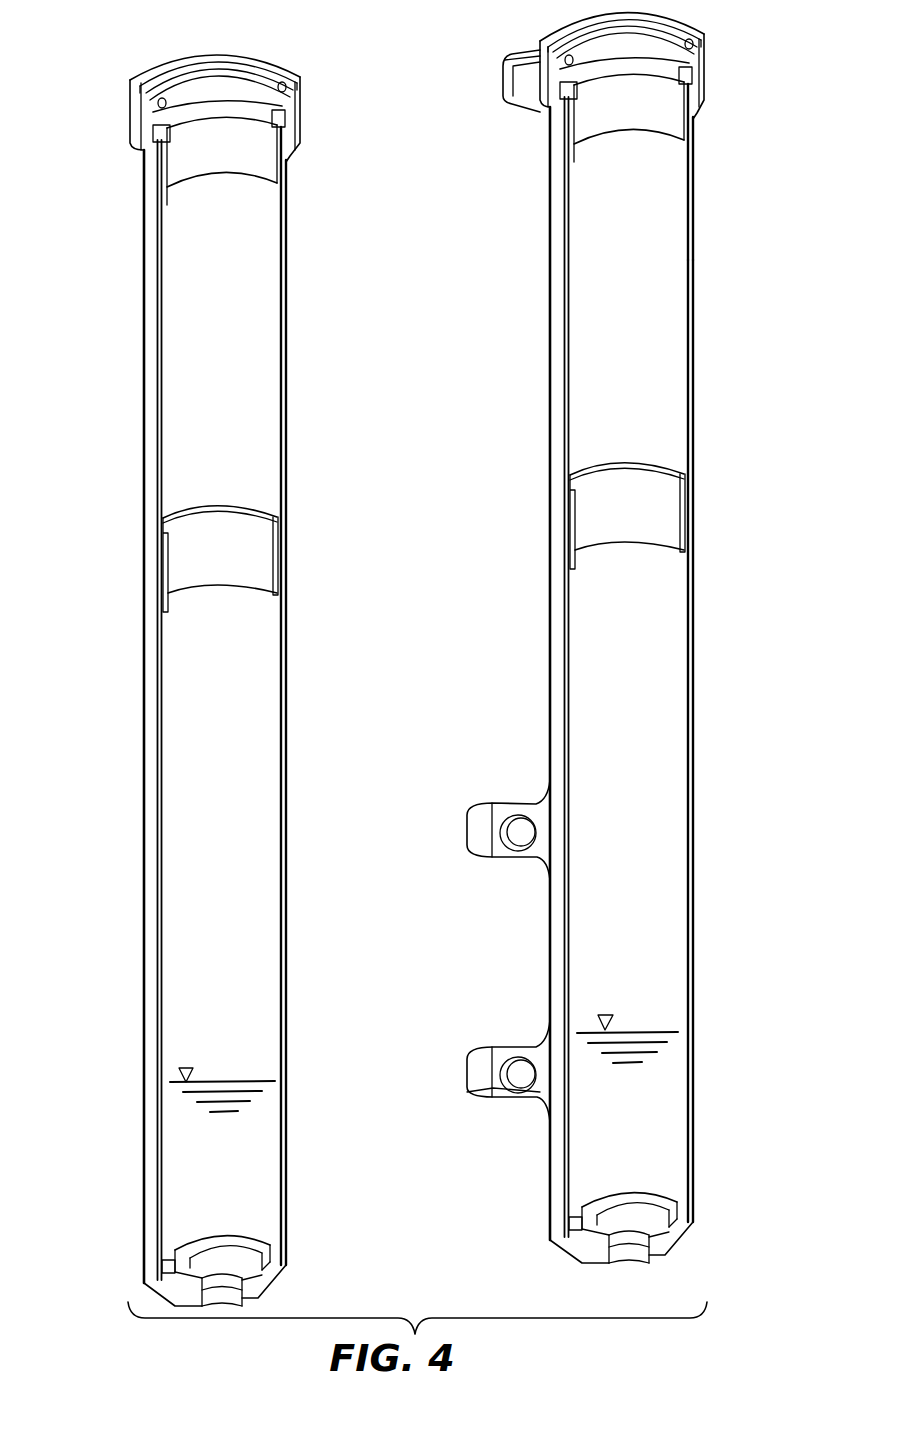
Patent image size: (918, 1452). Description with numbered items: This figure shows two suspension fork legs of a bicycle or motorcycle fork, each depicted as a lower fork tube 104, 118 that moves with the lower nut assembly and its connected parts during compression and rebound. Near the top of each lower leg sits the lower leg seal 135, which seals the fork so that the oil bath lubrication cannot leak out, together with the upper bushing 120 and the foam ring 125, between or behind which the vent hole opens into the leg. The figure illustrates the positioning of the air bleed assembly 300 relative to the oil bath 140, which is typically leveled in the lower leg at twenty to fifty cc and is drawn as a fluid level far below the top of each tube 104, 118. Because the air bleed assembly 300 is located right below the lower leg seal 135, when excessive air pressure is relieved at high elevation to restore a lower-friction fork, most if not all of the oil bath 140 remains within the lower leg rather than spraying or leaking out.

The lower fork tube 104 is at (147, 650).
The lower fork tube 118 is at (622, 668).
The upper bushing 120 is at (690, 112).
The foam ring 125 is at (169, 137).
The lower leg seal 135 is at (690, 33).
The oil bath 140 is at (255, 1169).
The air bleed assembly 300 is at (456, 81).